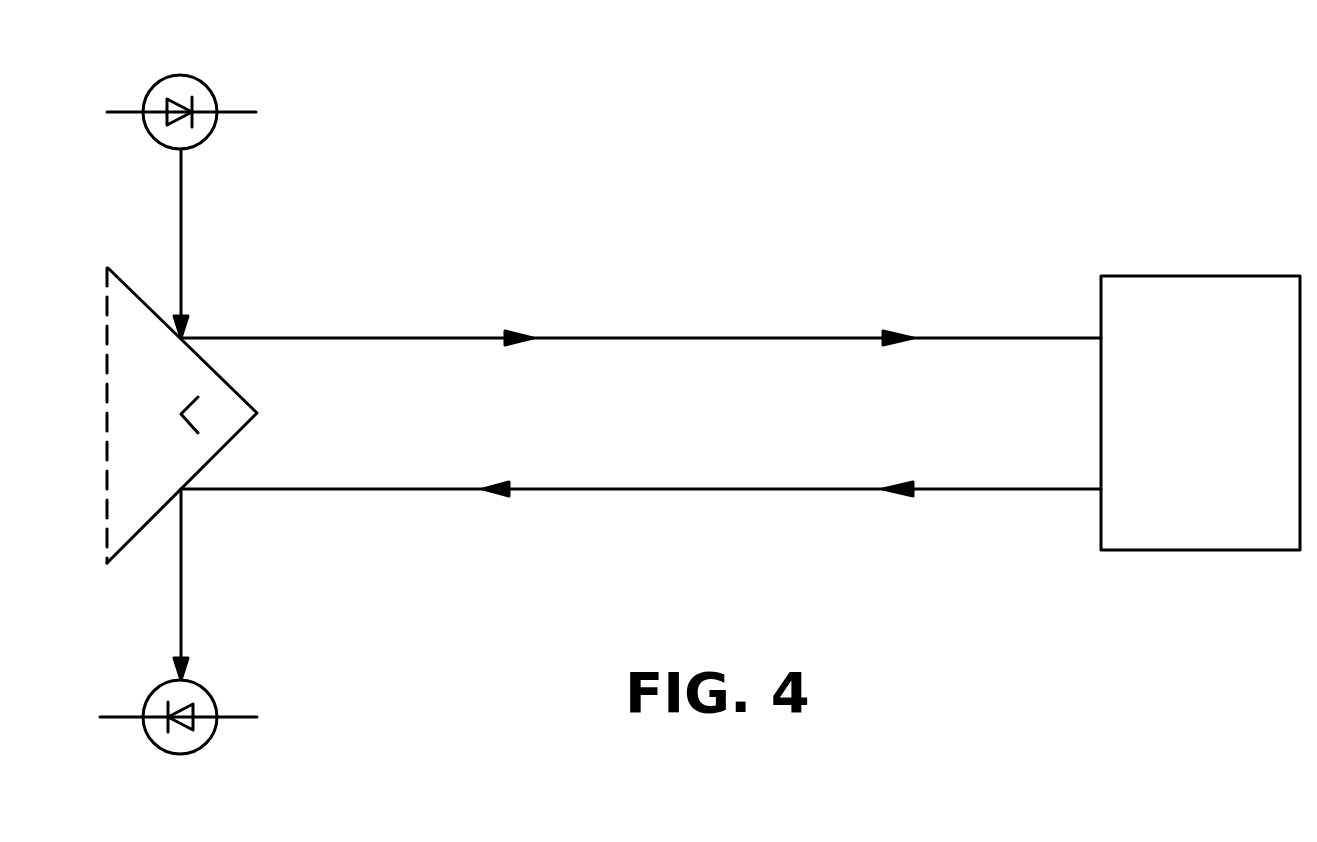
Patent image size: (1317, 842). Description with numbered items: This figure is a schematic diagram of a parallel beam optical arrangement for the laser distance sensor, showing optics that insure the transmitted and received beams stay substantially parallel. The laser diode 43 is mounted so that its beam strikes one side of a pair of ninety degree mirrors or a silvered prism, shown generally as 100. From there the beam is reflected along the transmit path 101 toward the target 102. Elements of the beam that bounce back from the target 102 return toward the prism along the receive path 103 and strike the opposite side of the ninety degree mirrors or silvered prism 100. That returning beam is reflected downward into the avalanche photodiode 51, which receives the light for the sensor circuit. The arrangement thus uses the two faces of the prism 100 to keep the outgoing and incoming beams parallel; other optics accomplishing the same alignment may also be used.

The laser diode 43 is at (207, 142).
The pair of 90° mirrors or silvered prism 100 is at (105, 318).
The path 101 is at (418, 338).
The target 102 is at (1230, 338).
The receive beam path (RX) 103 is at (665, 491).
The avalanche photodiode 51 is at (205, 688).